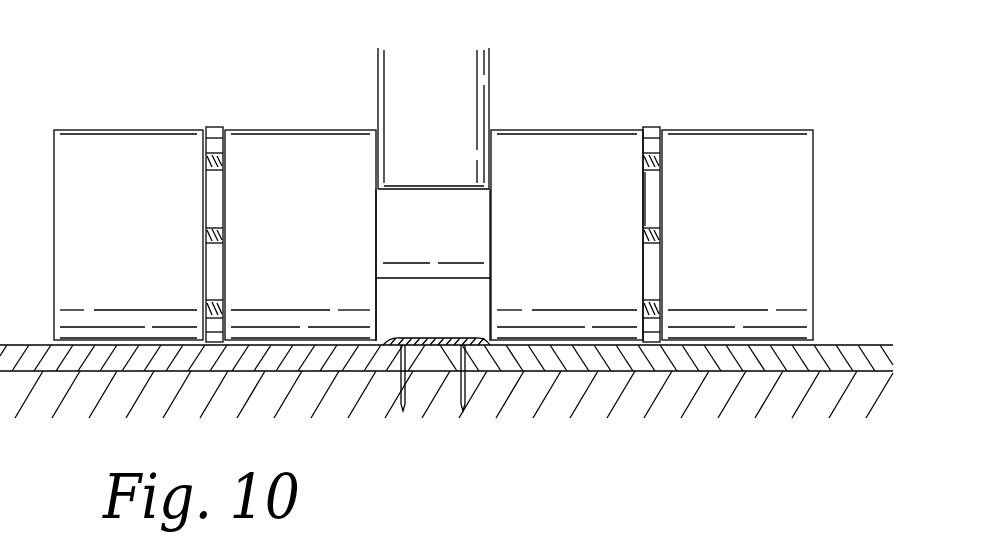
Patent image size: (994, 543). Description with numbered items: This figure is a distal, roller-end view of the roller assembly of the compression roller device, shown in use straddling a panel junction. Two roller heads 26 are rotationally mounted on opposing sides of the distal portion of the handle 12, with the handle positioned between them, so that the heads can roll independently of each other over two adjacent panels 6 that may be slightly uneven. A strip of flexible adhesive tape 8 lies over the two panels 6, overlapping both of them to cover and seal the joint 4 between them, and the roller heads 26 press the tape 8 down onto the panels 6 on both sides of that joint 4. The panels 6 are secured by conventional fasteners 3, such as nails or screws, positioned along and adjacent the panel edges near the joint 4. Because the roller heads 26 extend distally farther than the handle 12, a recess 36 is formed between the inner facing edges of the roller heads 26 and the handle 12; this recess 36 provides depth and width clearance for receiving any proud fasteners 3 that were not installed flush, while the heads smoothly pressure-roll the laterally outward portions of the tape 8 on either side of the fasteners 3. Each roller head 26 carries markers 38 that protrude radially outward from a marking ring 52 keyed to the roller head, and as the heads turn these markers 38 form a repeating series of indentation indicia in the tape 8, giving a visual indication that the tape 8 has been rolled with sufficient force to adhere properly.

The fasteners 3 is at (394, 388).
The joint 4 is at (434, 378).
The panels 6 is at (862, 342).
The flexible adhesive tape 8 is at (586, 350).
The handle 12 is at (491, 86).
The roller heads 26 is at (133, 127).
The recess 36 is at (424, 318).
The markers 38 is at (653, 116).
The marking ring 52 is at (665, 197).